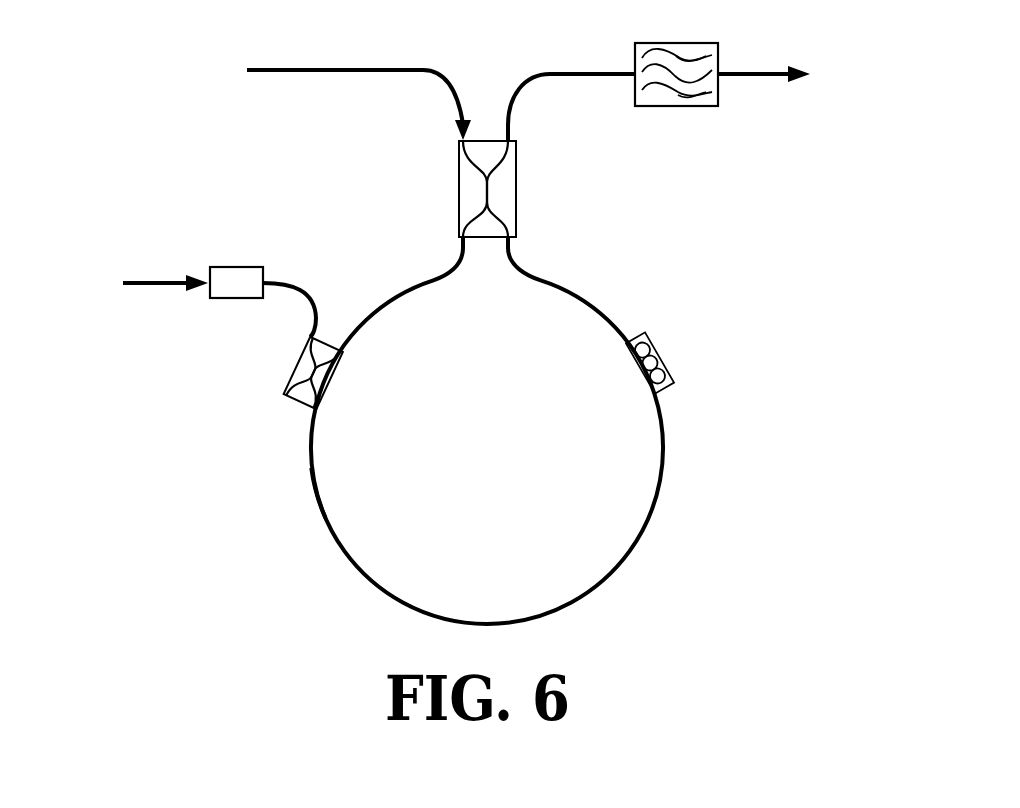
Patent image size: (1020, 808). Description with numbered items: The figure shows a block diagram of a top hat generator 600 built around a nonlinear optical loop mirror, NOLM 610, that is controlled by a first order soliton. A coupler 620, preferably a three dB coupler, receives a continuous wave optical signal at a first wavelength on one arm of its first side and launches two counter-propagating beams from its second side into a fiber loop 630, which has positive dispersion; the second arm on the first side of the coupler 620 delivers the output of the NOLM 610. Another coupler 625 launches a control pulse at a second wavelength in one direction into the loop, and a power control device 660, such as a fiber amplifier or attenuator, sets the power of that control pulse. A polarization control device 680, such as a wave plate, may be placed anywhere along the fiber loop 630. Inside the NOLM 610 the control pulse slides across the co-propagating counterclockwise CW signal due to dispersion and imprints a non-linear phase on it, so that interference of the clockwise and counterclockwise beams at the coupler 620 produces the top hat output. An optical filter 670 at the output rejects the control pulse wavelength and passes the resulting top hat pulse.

The top hat generator 600 is at (498, 19).
The NOLM 610 is at (338, 590).
The coupler 620 is at (459, 193).
The coupler 625 is at (300, 403).
The fiber loop 630 is at (325, 517).
The power control device 660 is at (242, 298).
The optical filter 670 is at (660, 107).
The polarization control device 680 is at (673, 383).